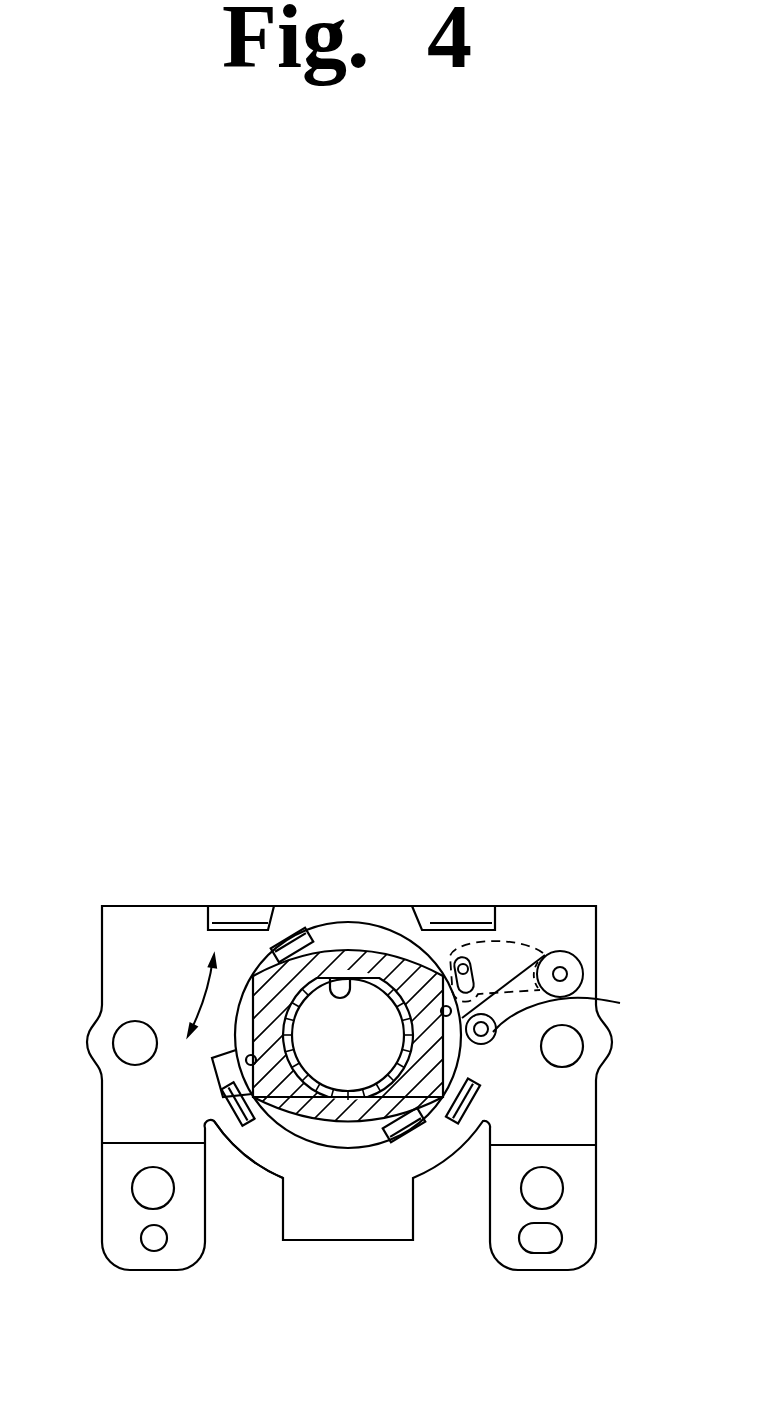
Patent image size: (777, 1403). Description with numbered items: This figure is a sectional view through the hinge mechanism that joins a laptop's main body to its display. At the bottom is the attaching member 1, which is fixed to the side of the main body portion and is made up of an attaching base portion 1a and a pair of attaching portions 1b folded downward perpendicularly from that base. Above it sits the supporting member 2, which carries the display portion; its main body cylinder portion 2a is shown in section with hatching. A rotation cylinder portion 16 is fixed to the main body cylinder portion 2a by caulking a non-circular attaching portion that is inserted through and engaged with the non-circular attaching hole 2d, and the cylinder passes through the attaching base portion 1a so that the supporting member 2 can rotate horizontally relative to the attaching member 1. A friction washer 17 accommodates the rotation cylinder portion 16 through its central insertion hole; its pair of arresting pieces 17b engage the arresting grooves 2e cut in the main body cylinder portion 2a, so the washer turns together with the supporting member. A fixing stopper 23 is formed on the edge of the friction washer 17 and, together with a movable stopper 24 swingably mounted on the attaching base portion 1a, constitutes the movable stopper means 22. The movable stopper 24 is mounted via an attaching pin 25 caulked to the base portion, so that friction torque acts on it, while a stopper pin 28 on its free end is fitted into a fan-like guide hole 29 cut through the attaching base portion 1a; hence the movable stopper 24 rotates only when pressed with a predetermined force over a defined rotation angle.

The attaching member 1 is at (626, 961).
The attaching base portion 1a is at (157, 923).
The attaching portions 1b is at (125, 1243).
The supporting member 2 is at (350, 1046).
The main body cylinder portion 2a is at (356, 968).
The non-circular attaching hole 2d is at (387, 944).
The arresting grooves 2e is at (302, 930).
The rotation cylinder portion 16 is at (273, 1180).
The friction washer 17 is at (350, 1138).
The arresting pieces 17b is at (290, 927).
The movable stopper means 22 is at (573, 958).
The fixing stopper 23 is at (212, 1066).
The movable stopper 24 is at (620, 1003).
The attaching pin 25 is at (568, 975).
The stopper pin 28 is at (493, 1038).
The guide hole 29 is at (470, 960).